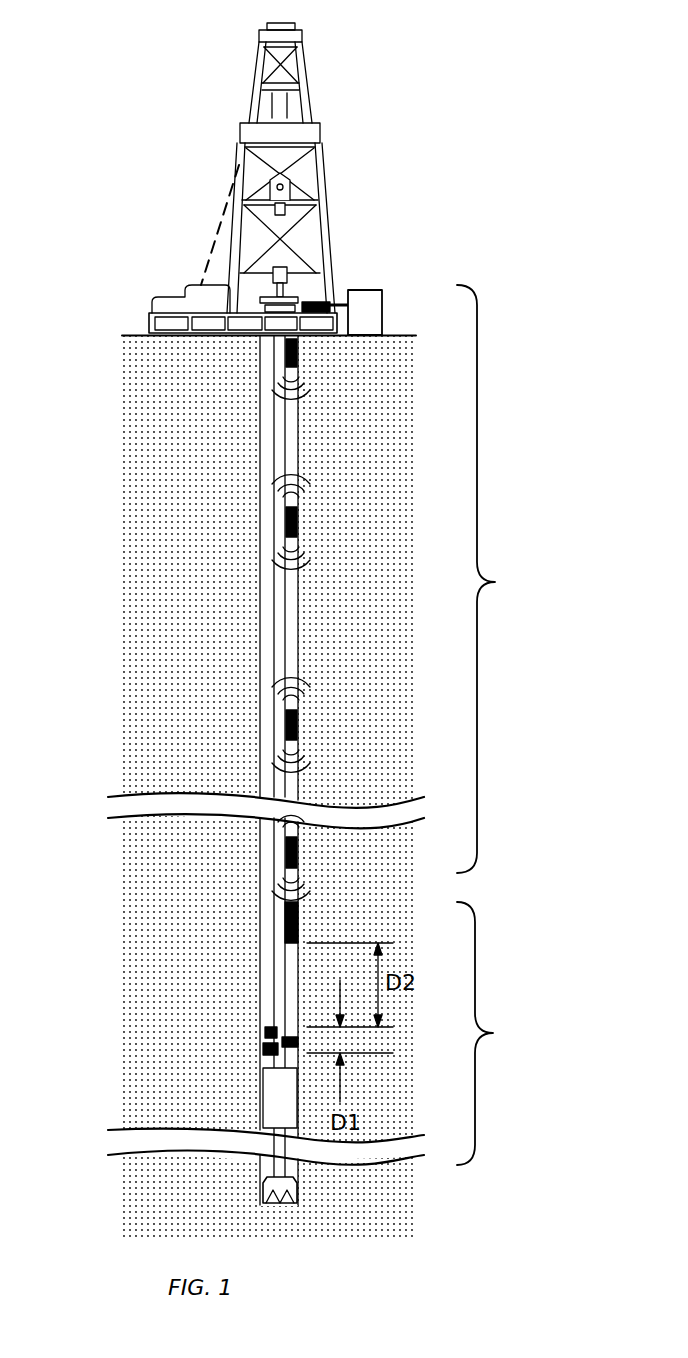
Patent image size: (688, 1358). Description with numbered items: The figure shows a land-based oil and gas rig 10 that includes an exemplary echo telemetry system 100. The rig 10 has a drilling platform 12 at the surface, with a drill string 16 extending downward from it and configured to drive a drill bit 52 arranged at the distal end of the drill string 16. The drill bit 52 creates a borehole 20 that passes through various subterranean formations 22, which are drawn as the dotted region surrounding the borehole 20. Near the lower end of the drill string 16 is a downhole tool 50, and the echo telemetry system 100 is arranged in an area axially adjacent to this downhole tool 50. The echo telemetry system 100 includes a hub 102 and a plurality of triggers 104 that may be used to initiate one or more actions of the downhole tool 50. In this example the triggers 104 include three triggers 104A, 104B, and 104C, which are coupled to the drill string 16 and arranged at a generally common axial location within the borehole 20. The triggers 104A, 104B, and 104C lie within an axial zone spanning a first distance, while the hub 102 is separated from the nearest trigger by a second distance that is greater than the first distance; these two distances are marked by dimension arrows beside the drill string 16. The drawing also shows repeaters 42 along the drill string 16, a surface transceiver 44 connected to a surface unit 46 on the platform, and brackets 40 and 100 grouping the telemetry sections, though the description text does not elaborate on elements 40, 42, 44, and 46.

The oil and gas rig 10 is at (130, 50).
The drilling platform 12 is at (322, 177).
The drill string 16 is at (281, 447).
The borehole 20 is at (262, 510).
The subterranean formations 22 is at (202, 677).
The telemetry network section 40 is at (495, 579).
The repeater / sensor nodes 42 is at (297, 355).
The surface transceiver 44 is at (325, 303).
The surface control unit 46 is at (376, 300).
The downhole tool 50 is at (278, 1097).
The drill bit 52 is at (265, 1188).
The echo telemetry system 100 is at (504, 1033).
The hub 102 is at (285, 917).
The triggers 104 is at (155, 1029).
The first trigger 104A is at (267, 1032).
The second trigger 104B is at (265, 1050).
The third trigger 104C is at (282, 1038).